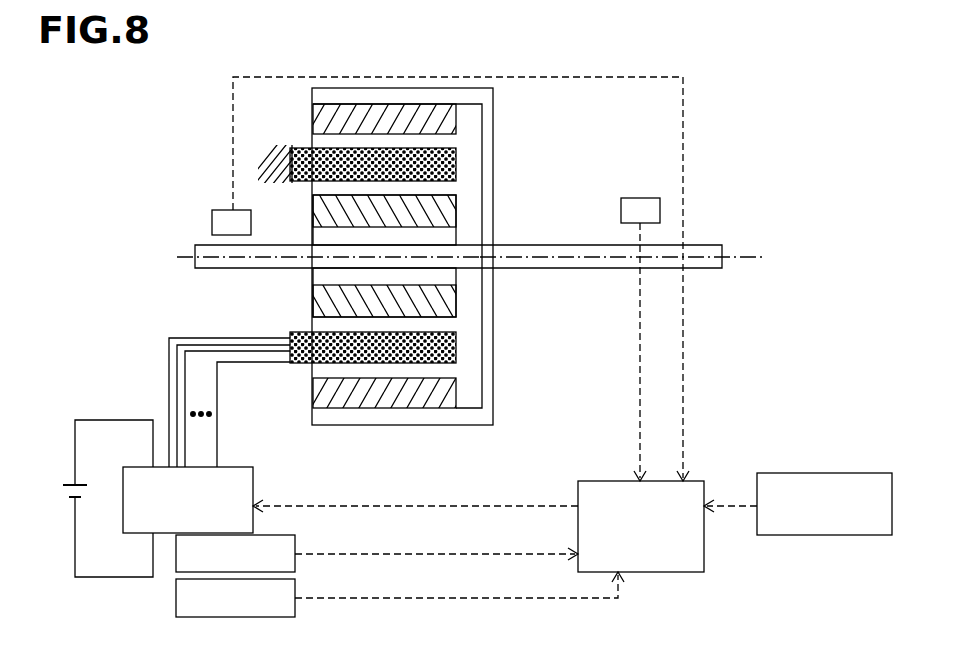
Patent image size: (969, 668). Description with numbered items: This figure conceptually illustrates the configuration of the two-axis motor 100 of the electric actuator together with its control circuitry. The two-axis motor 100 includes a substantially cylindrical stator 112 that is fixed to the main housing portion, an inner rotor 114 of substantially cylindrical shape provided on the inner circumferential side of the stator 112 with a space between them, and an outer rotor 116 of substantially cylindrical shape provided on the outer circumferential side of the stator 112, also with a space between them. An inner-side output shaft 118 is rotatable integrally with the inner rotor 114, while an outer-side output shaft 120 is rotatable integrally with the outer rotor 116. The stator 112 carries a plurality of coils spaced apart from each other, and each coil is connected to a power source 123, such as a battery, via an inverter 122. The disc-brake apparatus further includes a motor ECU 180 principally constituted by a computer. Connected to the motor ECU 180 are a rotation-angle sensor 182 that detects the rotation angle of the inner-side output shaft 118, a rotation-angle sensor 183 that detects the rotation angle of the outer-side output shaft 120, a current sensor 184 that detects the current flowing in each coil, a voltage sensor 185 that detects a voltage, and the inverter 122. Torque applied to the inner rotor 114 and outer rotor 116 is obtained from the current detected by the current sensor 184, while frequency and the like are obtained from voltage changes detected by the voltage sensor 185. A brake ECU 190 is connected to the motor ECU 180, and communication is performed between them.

The two-axis motor 100 is at (378, 74).
The stator 112 is at (447, 349).
The inner rotor 114 is at (327, 300).
The outer rotor 116 is at (423, 118).
The inner-side output shaft 118 is at (205, 250).
The outer-side output shaft 120 is at (710, 252).
The inverter 122 is at (239, 476).
The power source 123 is at (65, 468).
The motor ECU 180 is at (690, 488).
The rotation-angle sensor 182 is at (222, 215).
The rotation-angle sensor 183 is at (632, 205).
The current sensor 184 is at (287, 541).
The voltage sensor 185 is at (287, 611).
The brake ECU 190 is at (835, 480).